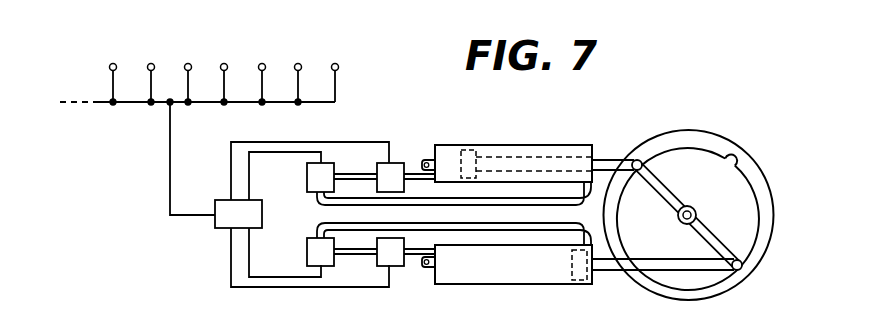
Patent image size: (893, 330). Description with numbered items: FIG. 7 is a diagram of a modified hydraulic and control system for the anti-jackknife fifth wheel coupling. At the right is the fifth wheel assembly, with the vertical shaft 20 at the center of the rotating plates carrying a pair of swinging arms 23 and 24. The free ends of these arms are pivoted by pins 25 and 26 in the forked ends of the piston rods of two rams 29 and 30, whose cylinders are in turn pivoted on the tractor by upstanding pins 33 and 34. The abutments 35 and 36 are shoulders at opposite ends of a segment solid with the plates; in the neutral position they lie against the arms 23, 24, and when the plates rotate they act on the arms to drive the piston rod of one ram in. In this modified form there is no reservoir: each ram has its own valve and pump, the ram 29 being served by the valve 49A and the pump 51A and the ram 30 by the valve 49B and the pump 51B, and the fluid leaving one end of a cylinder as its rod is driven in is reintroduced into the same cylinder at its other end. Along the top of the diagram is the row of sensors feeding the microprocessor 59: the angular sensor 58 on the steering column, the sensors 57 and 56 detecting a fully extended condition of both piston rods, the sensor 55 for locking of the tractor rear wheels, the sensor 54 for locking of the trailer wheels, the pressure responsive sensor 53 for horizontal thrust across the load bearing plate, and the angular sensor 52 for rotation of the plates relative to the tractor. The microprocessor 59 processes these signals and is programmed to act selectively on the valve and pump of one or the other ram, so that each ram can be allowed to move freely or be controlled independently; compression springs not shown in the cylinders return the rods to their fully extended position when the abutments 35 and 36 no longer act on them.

The vertical shaft 20 is at (678, 218).
The swinging arm 23 is at (668, 188).
The swinging arm 24 is at (719, 236).
The pin 25 is at (633, 160).
The pin 26 is at (740, 271).
The ram 29 is at (516, 138).
The ram 30 is at (512, 296).
The upstanding pin 33 is at (426, 161).
The upstanding pin 34 is at (426, 267).
The abutment (roller) 35 is at (649, 148).
The abutment (roller) 36 is at (733, 154).
The valve 49A is at (307, 175).
The valve 49B is at (307, 255).
The pump 51A is at (385, 163).
The pump 51B is at (385, 266).
The angular sensor 52 is at (335, 63).
The pressure responsive sensor 53 is at (298, 63).
The sensor 54 is at (262, 63).
The sensor 55 is at (224, 63).
The sensor 56 is at (188, 63).
The sensor 57 is at (151, 63).
The angular sensor 58 is at (113, 63).
The microprocessor 59 is at (215, 225).